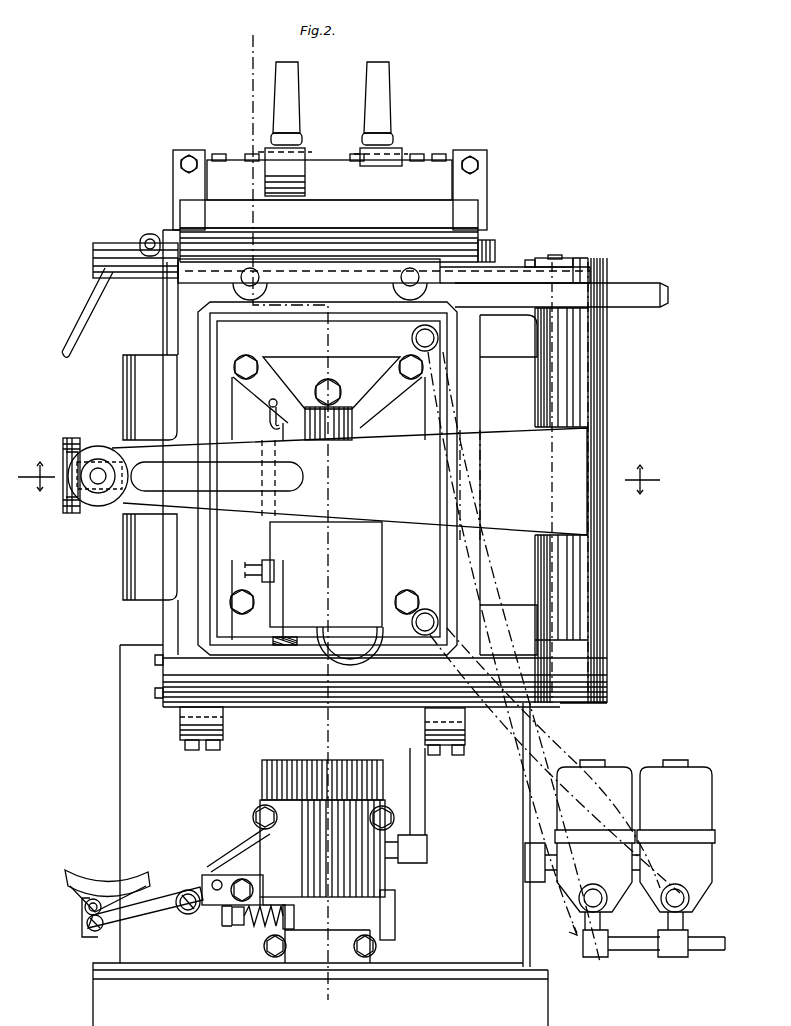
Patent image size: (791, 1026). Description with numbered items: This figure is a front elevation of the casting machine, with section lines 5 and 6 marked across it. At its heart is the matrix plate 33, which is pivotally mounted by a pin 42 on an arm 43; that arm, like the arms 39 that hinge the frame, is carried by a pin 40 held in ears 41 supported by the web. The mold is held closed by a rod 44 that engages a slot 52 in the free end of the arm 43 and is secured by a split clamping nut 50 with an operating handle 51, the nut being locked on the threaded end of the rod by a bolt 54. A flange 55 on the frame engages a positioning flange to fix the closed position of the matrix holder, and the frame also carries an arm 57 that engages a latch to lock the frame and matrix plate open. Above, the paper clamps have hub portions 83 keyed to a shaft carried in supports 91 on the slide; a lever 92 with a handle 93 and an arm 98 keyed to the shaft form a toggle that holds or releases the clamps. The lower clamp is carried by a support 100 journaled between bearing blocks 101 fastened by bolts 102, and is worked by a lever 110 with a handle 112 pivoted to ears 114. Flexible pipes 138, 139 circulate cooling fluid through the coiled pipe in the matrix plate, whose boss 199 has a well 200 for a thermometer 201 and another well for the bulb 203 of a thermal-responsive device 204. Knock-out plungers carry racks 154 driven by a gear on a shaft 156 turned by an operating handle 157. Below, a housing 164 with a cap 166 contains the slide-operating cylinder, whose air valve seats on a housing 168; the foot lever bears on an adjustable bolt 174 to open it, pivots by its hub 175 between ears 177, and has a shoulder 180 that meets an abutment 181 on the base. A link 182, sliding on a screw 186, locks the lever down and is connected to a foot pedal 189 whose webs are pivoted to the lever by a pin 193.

The section line 5- 5 is at (262, 44).
The section line 6- 6 is at (339, 478).
The matrix plate 33 is at (432, 410).
The arms 39 is at (510, 268).
The pin 40 is at (562, 259).
The ears 41 is at (516, 612).
The pin 42 is at (342, 454).
The arm 43 is at (495, 445).
The rod 44 is at (97, 487).
The split clamping nut 50 is at (86, 495).
The operating handle 51 is at (349, 481).
The slot 52 is at (99, 450).
The bolt 54 is at (72, 450).
The flange 55 is at (130, 380).
The arm 57 is at (632, 288).
The hub portions 83 is at (470, 157).
The supports 91 is at (320, 172).
The lever 92 is at (298, 150).
The handle 93 is at (290, 108).
The arm 98 is at (276, 155).
The support 100 is at (250, 748).
The bearing blocks 101 is at (462, 722).
The bolts 102 is at (452, 756).
The lever 110 is at (396, 150).
The handle 112 is at (385, 114).
The ears 114 is at (409, 157).
The flexible pipe 138 is at (413, 340).
The flexible pipe 139 is at (427, 635).
The racks 154 is at (410, 286).
The shaft 156 is at (95, 262).
The operating handle 157 is at (84, 318).
The housing 164 is at (386, 890).
The cap 166 is at (384, 770).
The housing 168 is at (322, 940).
The adjustable bolt 174 is at (225, 926).
The hub 175 is at (243, 880).
The ears 177 is at (226, 858).
The shoulder 180 is at (87, 937).
The abutment 181 is at (93, 968).
The link 182 is at (140, 922).
The screw 186 is at (190, 915).
The foot pedal 189 is at (96, 882).
The pin 193 is at (85, 907).
The boss 199 is at (268, 432).
The well 200 is at (269, 424).
The thermometer 201 is at (269, 404).
The bulb 203 is at (350, 636).
The thermal-responsive device 204 is at (326, 574).